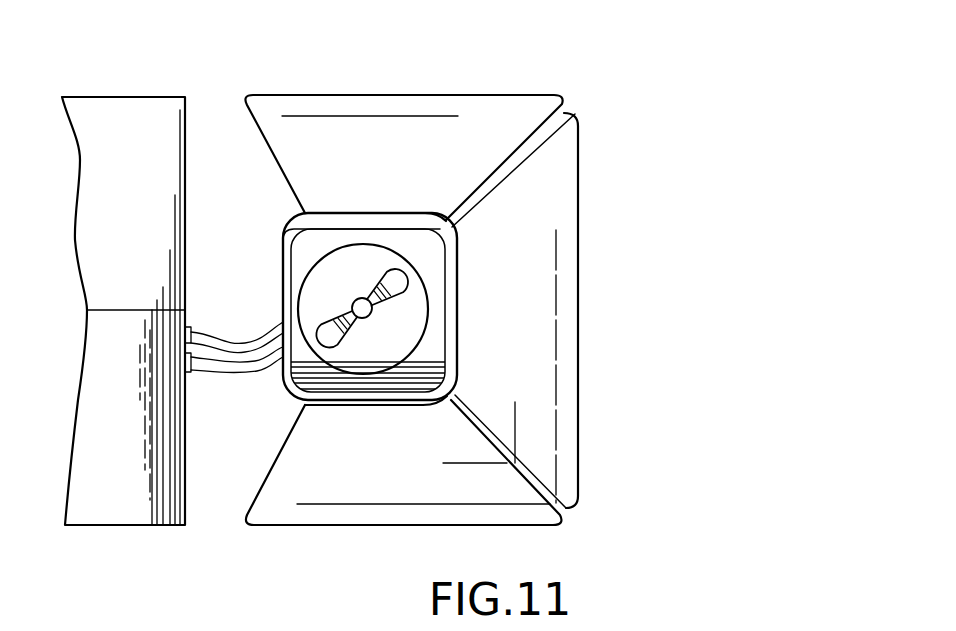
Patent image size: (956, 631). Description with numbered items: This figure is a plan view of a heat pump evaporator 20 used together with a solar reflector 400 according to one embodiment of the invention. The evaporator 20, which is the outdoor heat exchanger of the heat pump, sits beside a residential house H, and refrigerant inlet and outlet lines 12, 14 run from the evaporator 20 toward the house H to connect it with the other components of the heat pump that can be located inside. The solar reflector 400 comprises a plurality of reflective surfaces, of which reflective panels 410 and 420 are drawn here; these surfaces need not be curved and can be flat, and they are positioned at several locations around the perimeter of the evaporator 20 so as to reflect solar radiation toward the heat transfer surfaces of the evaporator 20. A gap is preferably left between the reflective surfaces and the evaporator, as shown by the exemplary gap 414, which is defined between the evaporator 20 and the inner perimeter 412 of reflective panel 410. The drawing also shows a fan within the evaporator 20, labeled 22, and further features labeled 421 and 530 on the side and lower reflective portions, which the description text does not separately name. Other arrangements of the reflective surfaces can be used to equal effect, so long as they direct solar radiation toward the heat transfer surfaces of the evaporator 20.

The house H is at (141, 90).
The refrigerant inlet line 12 is at (244, 333).
The refrigerant outlet line 14 is at (238, 372).
The heat pump evaporator 20 is at (447, 245).
The fan blade 22 is at (388, 296).
The solar reflector 400 is at (511, 34).
The reflective panel 410 is at (391, 94).
The inner perimeter 412 is at (348, 212).
The gap 414 is at (300, 222).
The reflective panel 420 is at (580, 421).
The side panel 421 is at (555, 191).
The bottom panel lower edge 530 is at (308, 530).